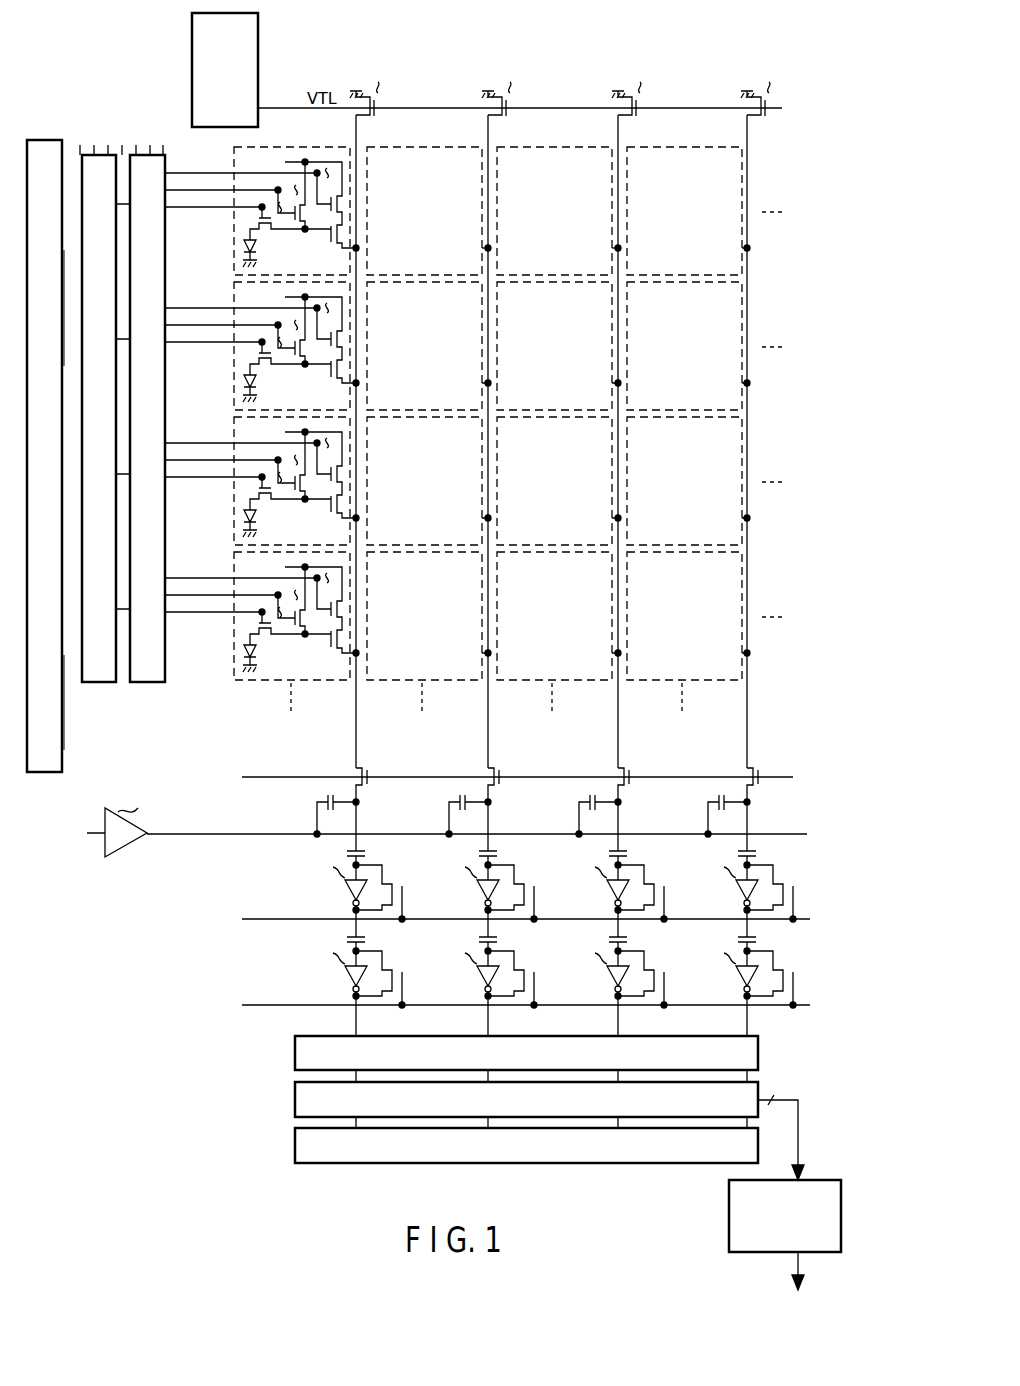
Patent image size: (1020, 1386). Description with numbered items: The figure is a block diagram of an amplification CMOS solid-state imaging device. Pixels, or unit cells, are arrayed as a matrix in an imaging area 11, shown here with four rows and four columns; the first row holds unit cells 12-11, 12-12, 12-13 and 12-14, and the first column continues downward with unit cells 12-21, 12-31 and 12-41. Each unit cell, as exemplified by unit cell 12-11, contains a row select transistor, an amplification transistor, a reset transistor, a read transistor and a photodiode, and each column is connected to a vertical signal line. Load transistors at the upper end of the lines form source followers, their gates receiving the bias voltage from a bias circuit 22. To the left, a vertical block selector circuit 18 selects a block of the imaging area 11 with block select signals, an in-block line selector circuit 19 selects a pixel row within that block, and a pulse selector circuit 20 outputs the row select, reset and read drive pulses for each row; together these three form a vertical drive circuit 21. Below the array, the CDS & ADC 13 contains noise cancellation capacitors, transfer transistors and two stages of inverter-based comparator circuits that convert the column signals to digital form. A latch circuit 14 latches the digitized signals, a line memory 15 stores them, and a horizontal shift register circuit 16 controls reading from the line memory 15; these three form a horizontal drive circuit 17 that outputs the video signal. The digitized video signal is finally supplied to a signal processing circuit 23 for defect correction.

The imaging area 11 is at (810, 141).
The unit cell 12-11 is at (268, 147).
The unit cell 12-12 is at (390, 147).
The unit cell 12-13 is at (520, 147).
The unit cell 12-14 is at (650, 147).
The unit cell 12-21 is at (234, 386).
The unit cell 12-31 is at (234, 521).
The unit cell 12-41 is at (234, 656).
The CDS & ADC 13 is at (213, 775).
The latch circuit 14 is at (295, 1052).
The line memory 15 is at (295, 1098).
The horizontal shift register circuit 16 is at (295, 1144).
The horizontal drive circuit 17 is at (219, 1059).
The vertical block selector circuit 18 is at (45, 140).
The in-block line selector circuit 19 is at (106, 683).
The pulse selector circuit 20 is at (155, 683).
The vertical drive circuit 21 is at (109, 80).
The bias circuit 22 is at (192, 27).
The signal processing circuit 23 is at (729, 1217).